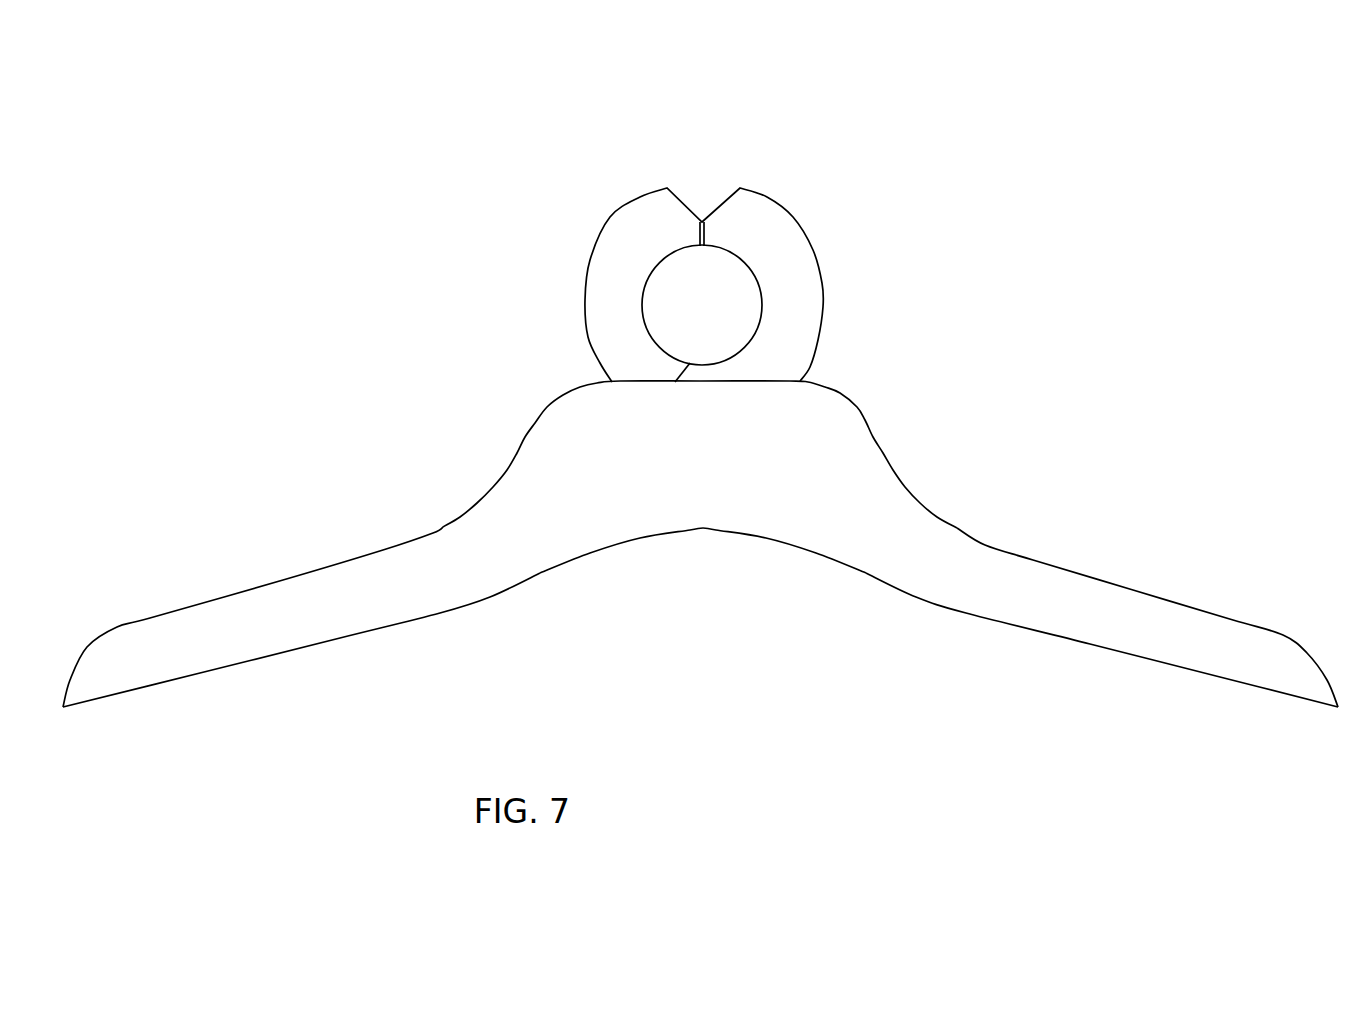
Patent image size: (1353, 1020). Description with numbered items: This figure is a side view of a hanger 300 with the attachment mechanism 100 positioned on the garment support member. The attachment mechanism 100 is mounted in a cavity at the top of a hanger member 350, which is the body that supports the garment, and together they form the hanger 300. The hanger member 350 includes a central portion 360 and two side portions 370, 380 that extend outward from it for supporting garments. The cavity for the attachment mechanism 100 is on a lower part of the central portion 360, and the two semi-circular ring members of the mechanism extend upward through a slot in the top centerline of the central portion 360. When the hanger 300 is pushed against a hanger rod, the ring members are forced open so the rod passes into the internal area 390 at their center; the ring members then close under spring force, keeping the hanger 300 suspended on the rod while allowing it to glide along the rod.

The hanger 300 is at (918, 68).
The attachment mechanism 100 is at (588, 224).
The internal area 390 is at (738, 331).
The central portion 360 is at (688, 471).
The hanger member 350 is at (702, 555).
The side portion 380 is at (307, 610).
The side portion 370 is at (1037, 621).